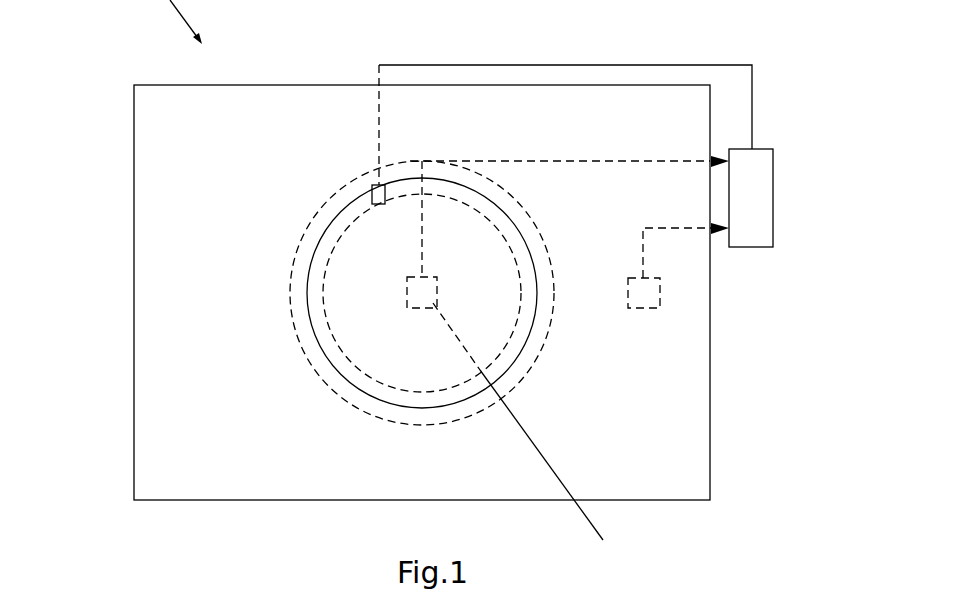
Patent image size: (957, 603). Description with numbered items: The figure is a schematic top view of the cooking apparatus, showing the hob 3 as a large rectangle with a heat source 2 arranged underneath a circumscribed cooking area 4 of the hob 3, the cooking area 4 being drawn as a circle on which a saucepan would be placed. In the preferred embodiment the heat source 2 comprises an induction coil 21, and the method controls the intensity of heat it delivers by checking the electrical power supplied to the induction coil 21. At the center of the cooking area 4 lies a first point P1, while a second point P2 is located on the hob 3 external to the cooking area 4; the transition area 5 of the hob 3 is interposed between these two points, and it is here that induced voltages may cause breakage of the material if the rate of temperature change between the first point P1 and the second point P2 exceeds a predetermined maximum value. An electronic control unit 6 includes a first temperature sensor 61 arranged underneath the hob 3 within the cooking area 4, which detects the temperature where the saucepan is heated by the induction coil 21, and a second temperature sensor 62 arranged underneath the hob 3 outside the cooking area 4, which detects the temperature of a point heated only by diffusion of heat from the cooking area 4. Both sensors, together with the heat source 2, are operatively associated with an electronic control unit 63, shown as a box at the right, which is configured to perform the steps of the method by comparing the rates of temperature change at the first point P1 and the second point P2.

The heat source 2 is at (393, 365).
The induction coil 21 is at (372, 363).
The hob 3 is at (104, 354).
The cooking area 4 is at (422, 363).
The transition area 5 is at (320, 225).
The electronic control unit 6 is at (613, 195).
The first temperature sensor 61 is at (530, 432).
The second temperature sensor 62 is at (661, 303).
The electronic control unit 63 is at (758, 185).
The first point P1 is at (422, 293).
The second point P2 is at (645, 293).